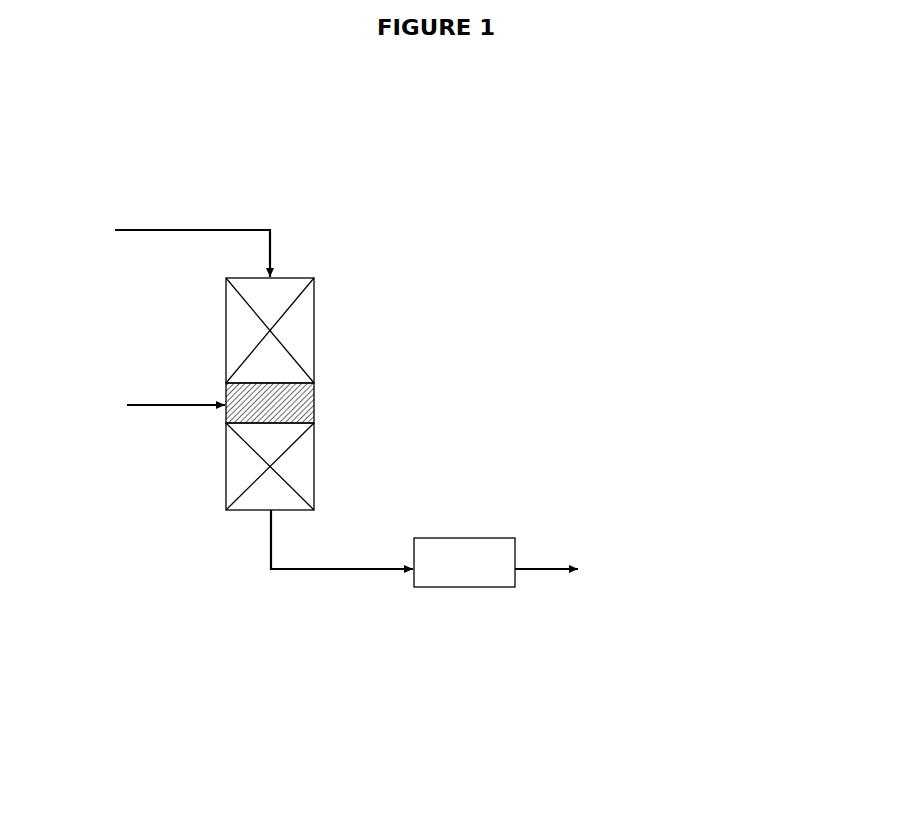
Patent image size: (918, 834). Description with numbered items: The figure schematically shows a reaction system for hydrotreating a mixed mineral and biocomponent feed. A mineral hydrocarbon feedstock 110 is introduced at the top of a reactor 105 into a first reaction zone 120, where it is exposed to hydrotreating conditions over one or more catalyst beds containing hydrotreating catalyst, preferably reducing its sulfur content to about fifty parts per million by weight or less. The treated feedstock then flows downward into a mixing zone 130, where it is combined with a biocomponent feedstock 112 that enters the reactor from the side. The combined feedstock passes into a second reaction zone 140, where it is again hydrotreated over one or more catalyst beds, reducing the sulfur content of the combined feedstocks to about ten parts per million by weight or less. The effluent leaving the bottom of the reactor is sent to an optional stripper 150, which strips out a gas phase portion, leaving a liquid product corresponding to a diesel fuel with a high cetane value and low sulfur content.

The reactor 105 is at (150, 713).
The mineral hydrocarbon feedstock 110 is at (236, 221).
The biocomponent feedstock 112 is at (132, 433).
The first reaction zone 120 is at (314, 295).
The mixing zone 130 is at (315, 407).
The second reaction zone 140 is at (315, 479).
The stripper 150 is at (438, 597).